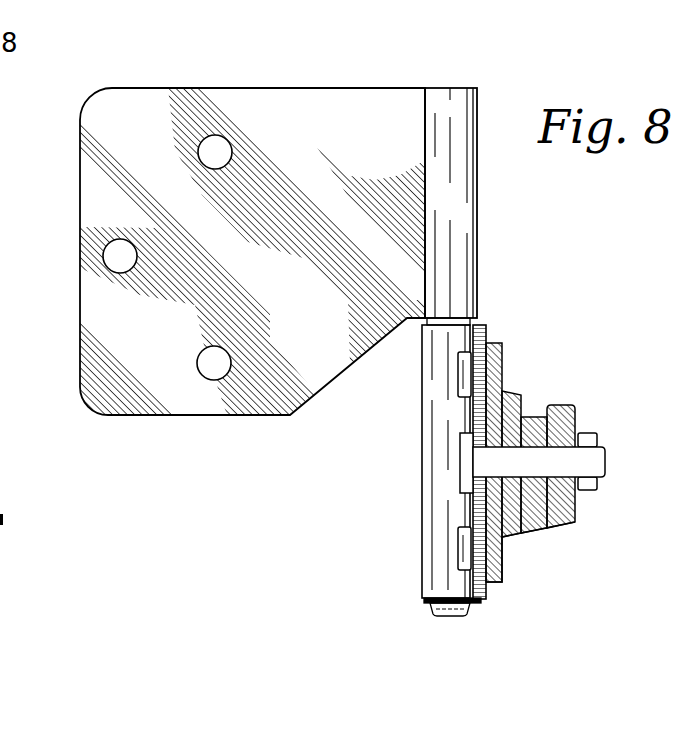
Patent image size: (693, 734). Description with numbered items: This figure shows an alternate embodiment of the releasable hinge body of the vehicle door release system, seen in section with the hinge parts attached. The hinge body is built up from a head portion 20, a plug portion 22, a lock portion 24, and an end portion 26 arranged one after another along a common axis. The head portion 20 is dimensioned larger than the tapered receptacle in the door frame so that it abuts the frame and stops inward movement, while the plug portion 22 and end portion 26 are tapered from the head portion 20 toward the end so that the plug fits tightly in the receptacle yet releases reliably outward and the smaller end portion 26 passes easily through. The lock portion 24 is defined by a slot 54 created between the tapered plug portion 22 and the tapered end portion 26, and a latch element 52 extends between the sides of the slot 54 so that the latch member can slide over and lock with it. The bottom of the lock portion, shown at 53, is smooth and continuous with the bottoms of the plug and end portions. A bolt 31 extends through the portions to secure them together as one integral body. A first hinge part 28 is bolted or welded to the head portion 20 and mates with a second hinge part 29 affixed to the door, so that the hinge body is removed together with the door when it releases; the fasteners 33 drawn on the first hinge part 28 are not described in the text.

The second hinge part 29 is at (228, 92).
The first hinge part 28 is at (481, 327).
The head portion 20 is at (497, 346).
The lock portion 24 is at (530, 418).
The slot 54 is at (535, 418).
The end portion 26 is at (566, 405).
The latch element 52 is at (573, 425).
The bolt 31 is at (580, 464).
The fastener nut 33 is at (458, 372).
The smooth bottom of the lock portion 53 is at (535, 535).
The plug portion 22 is at (512, 537).